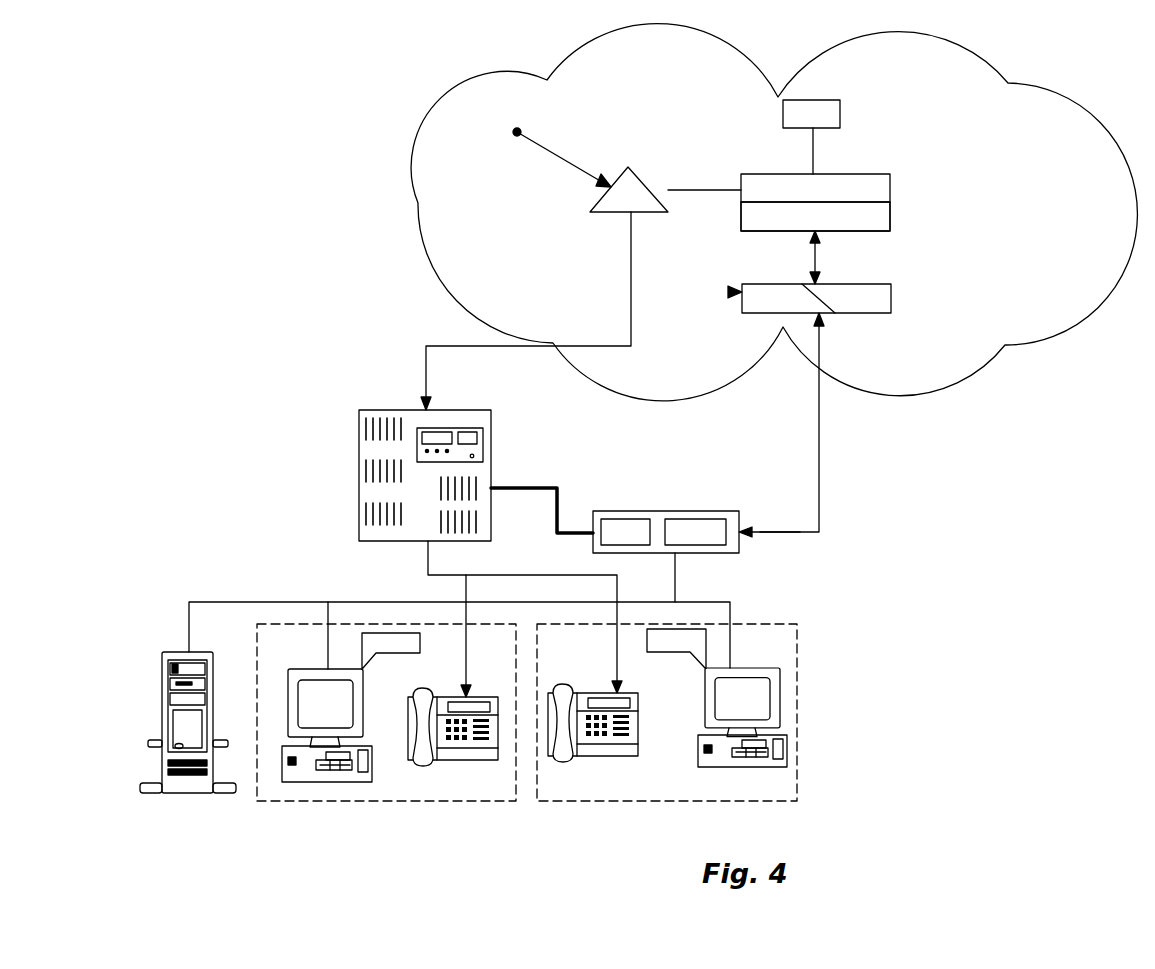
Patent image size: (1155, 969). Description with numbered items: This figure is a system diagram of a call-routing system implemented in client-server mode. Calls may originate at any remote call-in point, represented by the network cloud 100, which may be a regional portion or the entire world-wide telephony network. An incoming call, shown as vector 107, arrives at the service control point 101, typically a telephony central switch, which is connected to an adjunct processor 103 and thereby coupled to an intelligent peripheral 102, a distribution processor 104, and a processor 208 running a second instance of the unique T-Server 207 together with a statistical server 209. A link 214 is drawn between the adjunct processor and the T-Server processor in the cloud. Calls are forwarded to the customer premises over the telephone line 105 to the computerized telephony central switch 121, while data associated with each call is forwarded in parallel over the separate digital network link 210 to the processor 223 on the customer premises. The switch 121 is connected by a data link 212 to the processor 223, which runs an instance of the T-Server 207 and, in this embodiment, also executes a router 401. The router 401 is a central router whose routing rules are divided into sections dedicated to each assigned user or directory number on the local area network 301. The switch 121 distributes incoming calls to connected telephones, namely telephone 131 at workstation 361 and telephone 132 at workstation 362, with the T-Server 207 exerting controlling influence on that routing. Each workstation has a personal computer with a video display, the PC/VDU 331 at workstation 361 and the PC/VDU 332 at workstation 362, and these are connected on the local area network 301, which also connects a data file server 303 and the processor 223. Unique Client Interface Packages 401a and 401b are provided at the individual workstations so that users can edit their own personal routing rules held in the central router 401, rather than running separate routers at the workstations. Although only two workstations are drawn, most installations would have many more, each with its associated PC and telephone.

The network cloud 100 is at (416, 206).
The service control point 101 is at (628, 165).
The intelligent peripheral 102 is at (782, 118).
The adjunct processor 103 is at (890, 190).
The distribution processor 104 is at (890, 215).
The telephone line 105 is at (425, 378).
The vector 107 is at (541, 148).
The telephony central switch 121 is at (358, 478).
The telephone 131 is at (483, 755).
The telephone 132 is at (625, 750).
The telephony server (T-Server) 207 is at (760, 302).
The processor 208 is at (730, 292).
The statistical server 209 is at (878, 302).
The digital network link 210 is at (820, 468).
The data link 212 is at (510, 487).
The link between adjunct processor and telephony server 214 is at (816, 257).
The processor 223 is at (740, 517).
The local area network 301 is at (222, 601).
The data file server 303 is at (164, 698).
The PC/VDU 331 is at (298, 782).
The PC/VDU 332 is at (784, 750).
The workstation 361 is at (448, 802).
The workstation 362 is at (697, 802).
The router 401 is at (718, 519).
The Client Interface Package 401a is at (700, 643).
The Client Interface Package 401b is at (377, 632).